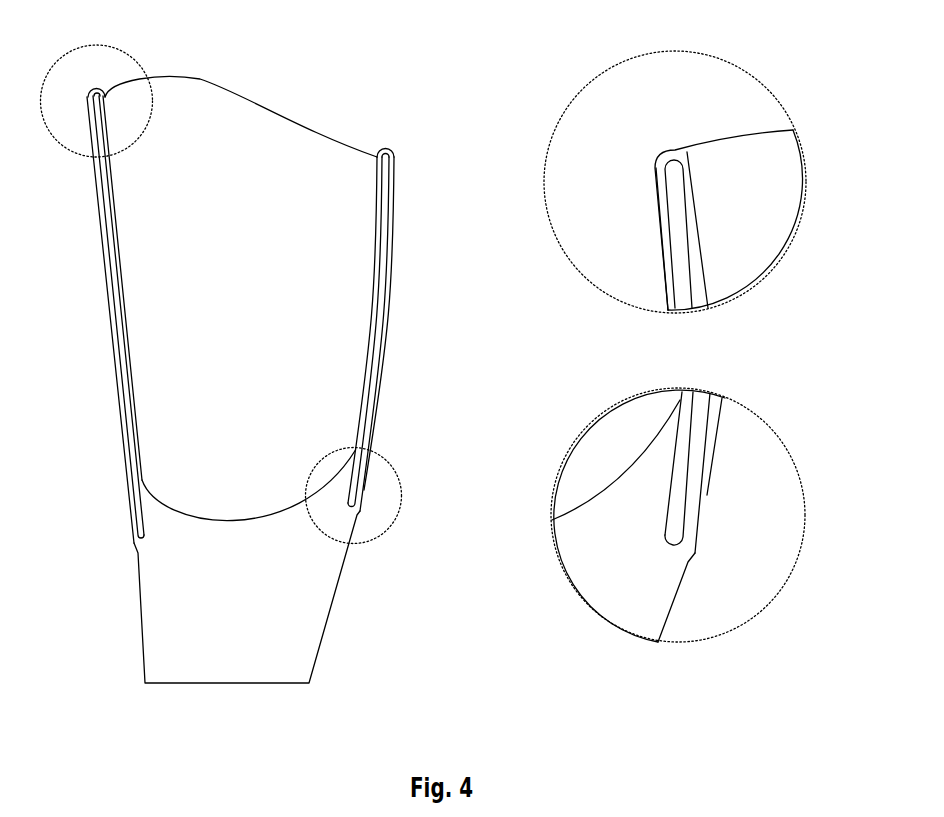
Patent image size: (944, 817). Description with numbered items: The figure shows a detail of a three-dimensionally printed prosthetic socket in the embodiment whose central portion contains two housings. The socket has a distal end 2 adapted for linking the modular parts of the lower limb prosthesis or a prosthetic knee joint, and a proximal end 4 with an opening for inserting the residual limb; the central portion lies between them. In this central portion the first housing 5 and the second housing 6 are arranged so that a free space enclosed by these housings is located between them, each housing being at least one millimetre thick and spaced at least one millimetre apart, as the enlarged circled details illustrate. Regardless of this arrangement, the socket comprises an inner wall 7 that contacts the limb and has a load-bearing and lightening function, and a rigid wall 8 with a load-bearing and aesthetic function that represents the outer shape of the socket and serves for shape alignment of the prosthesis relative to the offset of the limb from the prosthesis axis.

The distal end 2 is at (323, 613).
The proximal end 4 is at (260, 128).
The first housing 5 is at (392, 268).
The second housing 6 is at (390, 325).
The inner wall 7 is at (385, 388).
The rigid wall 8 is at (382, 425).